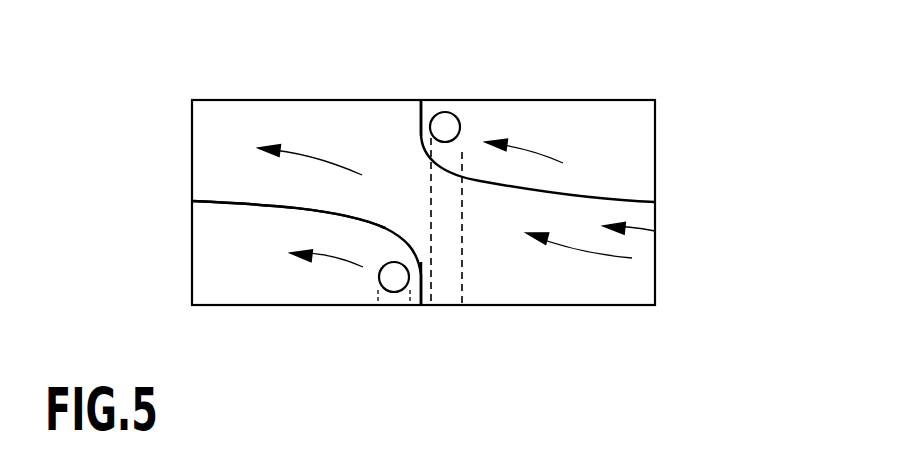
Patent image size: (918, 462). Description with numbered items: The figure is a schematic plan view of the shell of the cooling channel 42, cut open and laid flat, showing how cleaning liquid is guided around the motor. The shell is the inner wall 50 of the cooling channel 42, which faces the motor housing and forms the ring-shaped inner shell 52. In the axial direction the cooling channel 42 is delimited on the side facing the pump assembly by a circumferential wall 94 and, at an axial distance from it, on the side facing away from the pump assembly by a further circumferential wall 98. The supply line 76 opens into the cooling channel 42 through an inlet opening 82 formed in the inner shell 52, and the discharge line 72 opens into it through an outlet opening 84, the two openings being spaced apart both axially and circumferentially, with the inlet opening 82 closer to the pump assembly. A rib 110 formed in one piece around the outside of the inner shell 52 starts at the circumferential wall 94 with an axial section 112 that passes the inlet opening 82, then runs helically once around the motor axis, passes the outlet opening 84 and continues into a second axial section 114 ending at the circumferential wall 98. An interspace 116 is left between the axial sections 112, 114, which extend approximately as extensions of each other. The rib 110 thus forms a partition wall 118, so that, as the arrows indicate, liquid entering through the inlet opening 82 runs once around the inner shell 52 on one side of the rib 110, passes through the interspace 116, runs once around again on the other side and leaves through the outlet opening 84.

The cooling channel 42 is at (655, 231).
The inner wall 50 is at (633, 133).
The inner shell 52 is at (637, 168).
The discharge line 72 is at (433, 262).
The supply line 76 is at (386, 305).
The inlet opening 82 is at (392, 277).
The outlet opening 84 is at (446, 112).
The circumferential wall 94 is at (617, 305).
The circumferential wall 98 is at (503, 100).
The rib 110 is at (288, 203).
The axial section 112 is at (432, 278).
The axial section 114 is at (419, 126).
The interspace 116 is at (417, 232).
The partition wall 118 is at (237, 203).